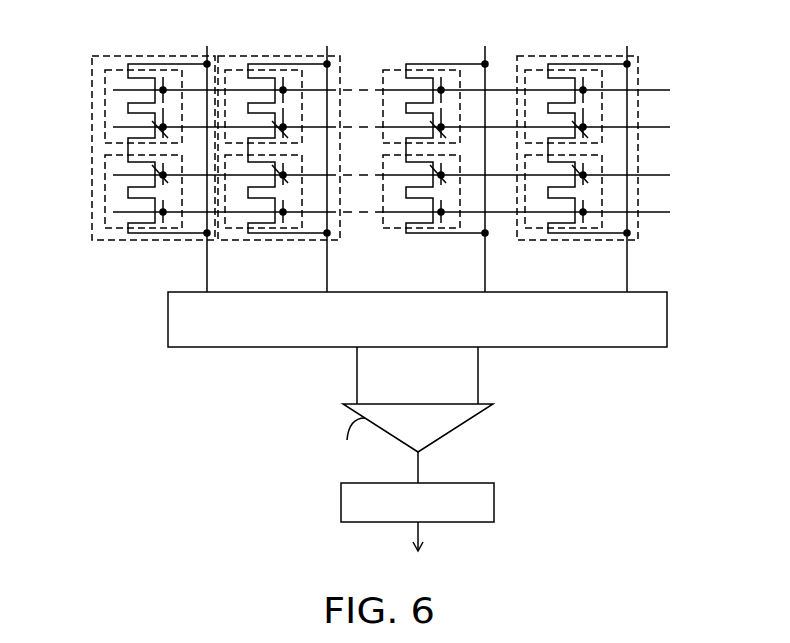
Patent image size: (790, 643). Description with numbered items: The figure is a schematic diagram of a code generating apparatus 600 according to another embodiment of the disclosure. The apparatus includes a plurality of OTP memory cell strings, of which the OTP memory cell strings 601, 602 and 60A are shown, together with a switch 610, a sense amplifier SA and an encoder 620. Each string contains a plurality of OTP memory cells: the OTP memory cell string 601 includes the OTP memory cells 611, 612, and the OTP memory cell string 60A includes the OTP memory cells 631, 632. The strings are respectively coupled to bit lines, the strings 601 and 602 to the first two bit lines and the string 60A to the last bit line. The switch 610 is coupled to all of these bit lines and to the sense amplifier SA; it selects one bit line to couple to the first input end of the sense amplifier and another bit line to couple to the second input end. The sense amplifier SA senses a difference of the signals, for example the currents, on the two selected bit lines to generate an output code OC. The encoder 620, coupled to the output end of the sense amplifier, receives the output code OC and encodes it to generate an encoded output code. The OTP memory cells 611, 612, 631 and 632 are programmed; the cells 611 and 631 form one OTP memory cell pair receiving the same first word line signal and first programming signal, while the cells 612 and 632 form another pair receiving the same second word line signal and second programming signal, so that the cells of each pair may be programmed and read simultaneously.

The code generating apparatus 600 is at (686, 547).
The OTP memory cell string 60A is at (640, 69).
The OTP memory cell string 601 is at (92, 153).
The OTP memory cell string 602 is at (343, 228).
The OTP memory cell 611 is at (113, 70).
The OTP memory cell 612 is at (112, 230).
The OTP memory cell 631 is at (573, 70).
The OTP memory cell 632 is at (530, 240).
The switch 610 is at (660, 293).
The encoder 620 is at (494, 502).